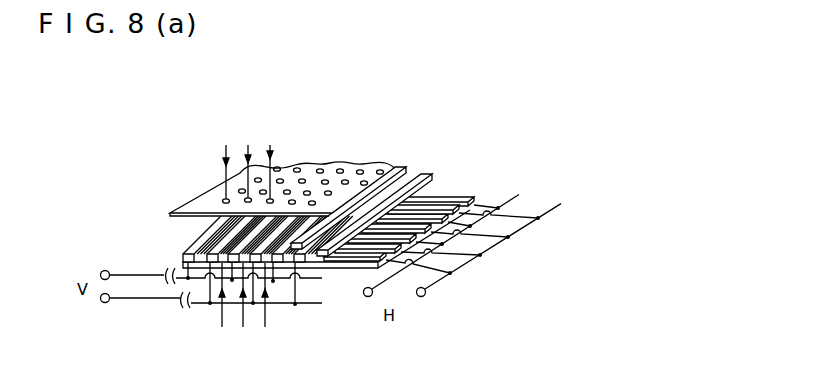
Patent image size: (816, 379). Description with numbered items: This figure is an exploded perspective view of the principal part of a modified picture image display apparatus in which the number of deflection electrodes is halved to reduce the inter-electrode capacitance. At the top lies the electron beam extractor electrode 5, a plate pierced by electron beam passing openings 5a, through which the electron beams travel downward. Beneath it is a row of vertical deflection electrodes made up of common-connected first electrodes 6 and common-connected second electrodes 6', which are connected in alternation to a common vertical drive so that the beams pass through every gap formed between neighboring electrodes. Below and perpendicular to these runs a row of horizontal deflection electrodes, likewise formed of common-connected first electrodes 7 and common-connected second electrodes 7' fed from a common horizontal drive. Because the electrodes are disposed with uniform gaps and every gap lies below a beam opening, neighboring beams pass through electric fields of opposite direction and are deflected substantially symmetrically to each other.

The electron beam extractor electrode 5 is at (192, 203).
The electron beam passing openings 5a is at (224, 199).
The first vertical deflection electrodes 6 is at (236, 239).
The second vertical deflection electrodes 6' is at (241, 229).
The first horizontal deflection electrodes 7 is at (403, 205).
The second horizontal deflection electrodes 7' is at (397, 201).